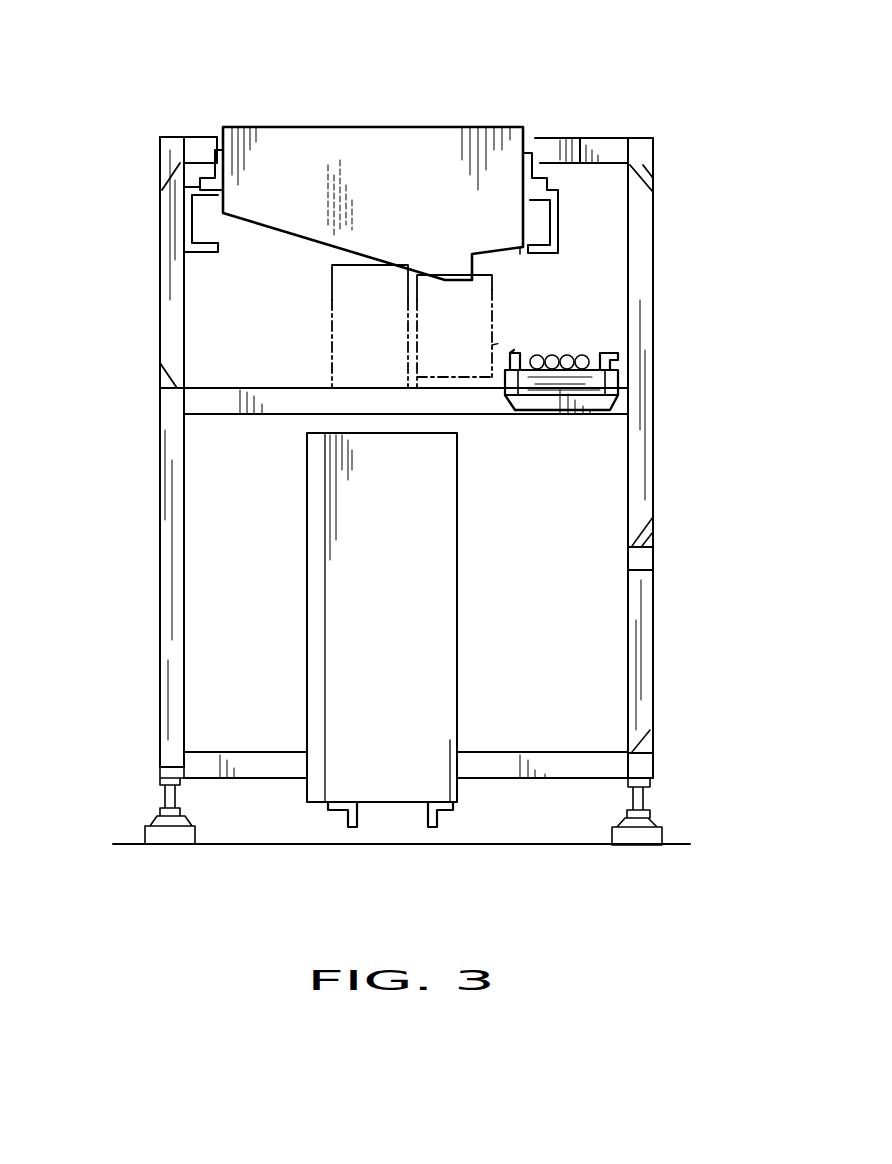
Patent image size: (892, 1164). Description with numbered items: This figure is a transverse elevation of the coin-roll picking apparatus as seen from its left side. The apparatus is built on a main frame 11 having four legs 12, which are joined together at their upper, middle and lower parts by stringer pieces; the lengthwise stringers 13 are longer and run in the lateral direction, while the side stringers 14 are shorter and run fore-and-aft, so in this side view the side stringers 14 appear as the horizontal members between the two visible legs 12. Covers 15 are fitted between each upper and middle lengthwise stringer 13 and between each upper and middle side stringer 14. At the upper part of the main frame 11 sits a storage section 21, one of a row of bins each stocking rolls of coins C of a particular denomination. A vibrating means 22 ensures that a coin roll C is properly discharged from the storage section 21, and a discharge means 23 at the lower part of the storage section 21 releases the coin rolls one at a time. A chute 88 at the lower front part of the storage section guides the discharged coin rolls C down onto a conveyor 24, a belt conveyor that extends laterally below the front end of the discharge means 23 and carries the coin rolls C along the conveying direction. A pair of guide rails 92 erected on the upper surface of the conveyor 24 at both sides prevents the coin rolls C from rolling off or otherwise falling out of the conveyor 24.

The main frame 11 is at (655, 455).
The legs 12 is at (158, 655).
The lengthwise stringers 13 is at (644, 138).
The side stringers 14 is at (604, 138).
The covers 15 is at (655, 170).
The storage section 21 is at (381, 126).
The vibrating means 22 is at (332, 292).
The discharge means 23 is at (496, 290).
The conveyor 24 is at (596, 386).
The chute 88 is at (498, 343).
The guide rails 92 is at (613, 355).
The coin rolls C is at (583, 355).